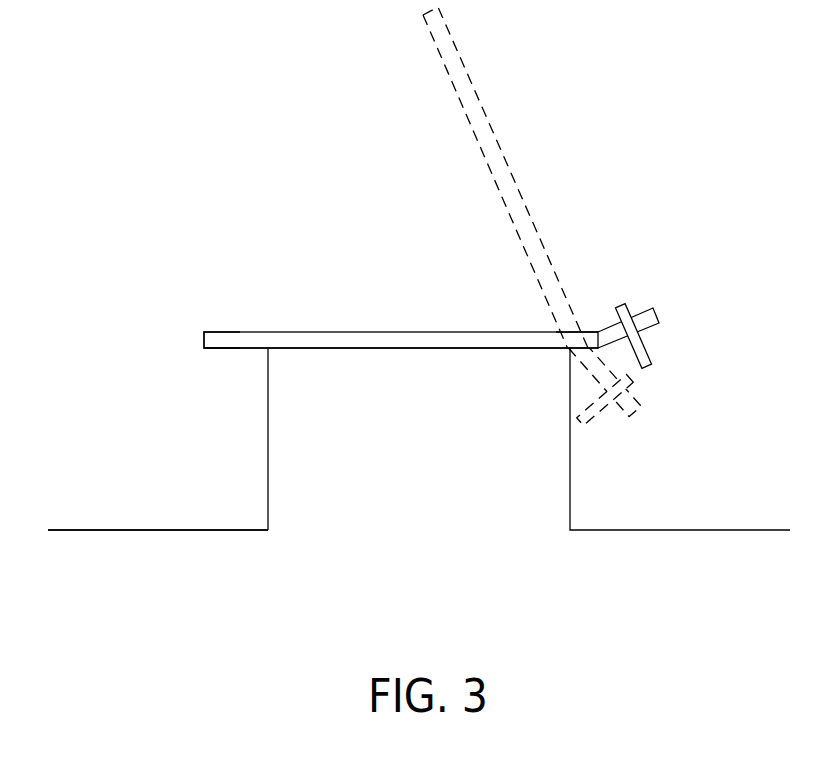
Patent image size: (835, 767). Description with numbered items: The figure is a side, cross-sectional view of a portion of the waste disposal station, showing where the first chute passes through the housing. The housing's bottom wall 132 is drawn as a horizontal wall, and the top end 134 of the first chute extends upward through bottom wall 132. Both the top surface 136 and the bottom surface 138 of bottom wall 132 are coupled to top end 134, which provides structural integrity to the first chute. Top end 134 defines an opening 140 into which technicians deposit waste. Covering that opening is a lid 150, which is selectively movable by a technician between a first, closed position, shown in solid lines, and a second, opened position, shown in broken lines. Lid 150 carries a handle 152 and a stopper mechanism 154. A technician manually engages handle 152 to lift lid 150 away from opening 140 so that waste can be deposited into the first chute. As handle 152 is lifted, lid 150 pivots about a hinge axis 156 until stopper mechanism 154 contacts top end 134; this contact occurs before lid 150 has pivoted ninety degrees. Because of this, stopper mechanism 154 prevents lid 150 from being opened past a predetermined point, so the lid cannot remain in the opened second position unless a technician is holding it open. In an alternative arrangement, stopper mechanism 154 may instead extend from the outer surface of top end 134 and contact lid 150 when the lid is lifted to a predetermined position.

The bottom wall 132 is at (678, 530).
The top end 134 is at (268, 438).
The top surface 136 is at (95, 529).
The bottom surface 138 is at (145, 530).
The opening 140 is at (390, 299).
The lid 150 is at (425, 340).
The handle 152 is at (228, 332).
The stopper mechanism 154 is at (672, 341).
The hinge axis 156 is at (583, 332).